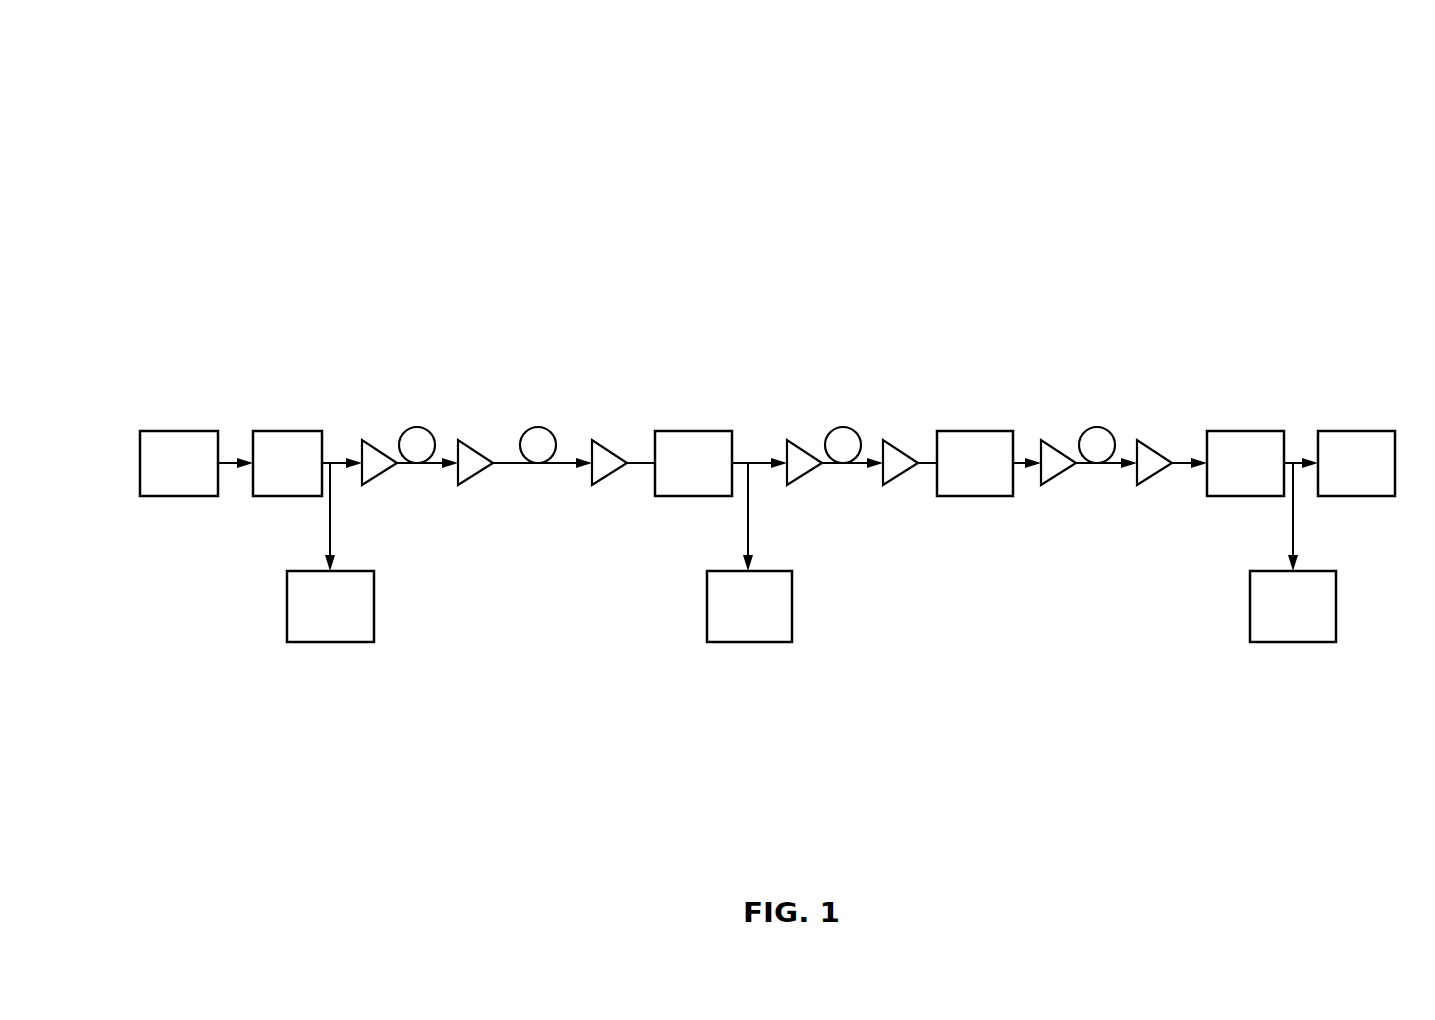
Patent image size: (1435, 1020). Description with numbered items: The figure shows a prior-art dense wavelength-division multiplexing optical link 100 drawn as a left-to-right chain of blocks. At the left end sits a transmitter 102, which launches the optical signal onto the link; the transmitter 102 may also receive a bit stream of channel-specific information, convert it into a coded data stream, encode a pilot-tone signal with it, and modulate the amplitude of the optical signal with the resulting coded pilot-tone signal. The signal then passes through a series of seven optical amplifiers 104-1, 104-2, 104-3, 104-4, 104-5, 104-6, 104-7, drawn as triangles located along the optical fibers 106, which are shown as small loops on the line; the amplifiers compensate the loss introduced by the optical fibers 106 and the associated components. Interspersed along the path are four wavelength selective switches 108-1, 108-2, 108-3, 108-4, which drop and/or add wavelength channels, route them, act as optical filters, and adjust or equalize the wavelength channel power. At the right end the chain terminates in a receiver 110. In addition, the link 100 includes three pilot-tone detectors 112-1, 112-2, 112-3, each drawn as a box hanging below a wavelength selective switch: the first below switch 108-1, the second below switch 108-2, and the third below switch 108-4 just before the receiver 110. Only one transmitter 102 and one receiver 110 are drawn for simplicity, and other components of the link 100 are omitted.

The DWDM optical link 100 is at (204, 50).
The transmitter 102 is at (171, 414).
The optical amplifier 104-1 is at (382, 500).
The optical amplifier 104-2 is at (478, 500).
The optical amplifier 104-3 is at (612, 500).
The optical amplifier 104-4 is at (807, 500).
The optical amplifier 104-5 is at (903, 500).
The optical amplifier 104-6 is at (1061, 500).
The optical amplifier 104-7 is at (1157, 500).
The optical fibers 106 is at (416, 410).
The wavelength selective switch 108-1 is at (288, 414).
The wavelength selective switch 108-2 is at (697, 414).
The wavelength selective switch 108-3 is at (968, 414).
The wavelength selective switch 108-4 is at (1245, 414).
The receiver 110 is at (1357, 414).
The PT detector 112-1 is at (298, 634).
The PT detector 112-2 is at (717, 634).
The PT detector 112-3 is at (1261, 634).